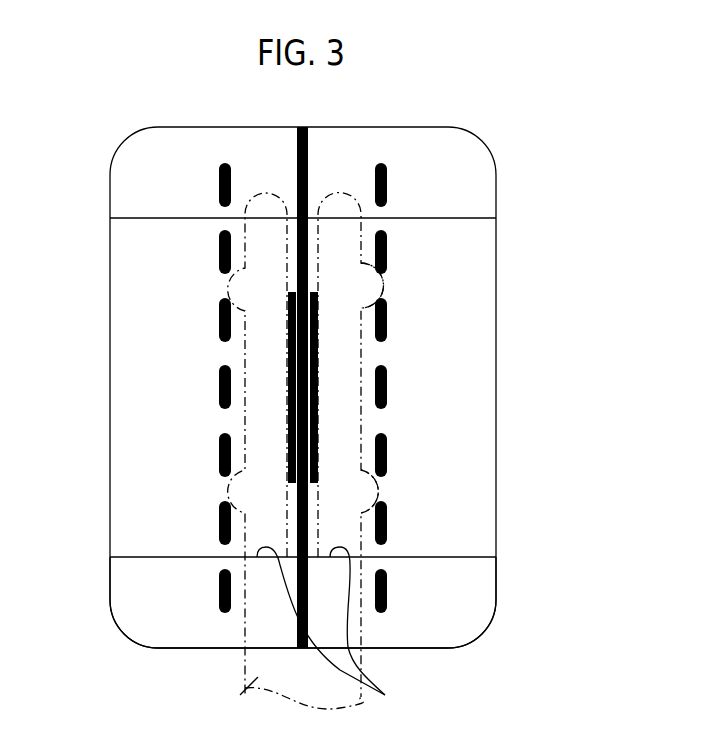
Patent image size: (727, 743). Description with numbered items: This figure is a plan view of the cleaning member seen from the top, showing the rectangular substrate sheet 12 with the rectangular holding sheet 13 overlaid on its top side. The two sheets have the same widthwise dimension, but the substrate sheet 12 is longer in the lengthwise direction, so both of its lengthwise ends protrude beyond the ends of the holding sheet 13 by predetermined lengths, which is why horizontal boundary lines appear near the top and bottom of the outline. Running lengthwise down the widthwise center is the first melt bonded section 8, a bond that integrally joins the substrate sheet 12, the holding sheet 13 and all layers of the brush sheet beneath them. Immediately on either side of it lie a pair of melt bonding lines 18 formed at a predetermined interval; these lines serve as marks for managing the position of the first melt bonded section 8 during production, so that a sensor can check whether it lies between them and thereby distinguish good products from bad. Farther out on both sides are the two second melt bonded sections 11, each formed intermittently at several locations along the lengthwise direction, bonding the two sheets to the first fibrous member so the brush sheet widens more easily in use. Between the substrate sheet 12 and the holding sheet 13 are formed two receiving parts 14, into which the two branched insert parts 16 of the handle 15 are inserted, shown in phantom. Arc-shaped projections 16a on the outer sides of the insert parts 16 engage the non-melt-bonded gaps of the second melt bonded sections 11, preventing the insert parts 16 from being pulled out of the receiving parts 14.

The first melt bonded section 8 is at (308, 162).
The second melt bonded sections 11 is at (219, 258).
The substrate sheet 12 is at (473, 197).
The holding sheet 13 is at (478, 540).
The receiving parts 14 is at (336, 629).
The handle 15 is at (245, 688).
The insert parts 16 is at (255, 411).
The arc-shaped projections 16a is at (377, 285).
The melt bonding lines 18 is at (288, 422).